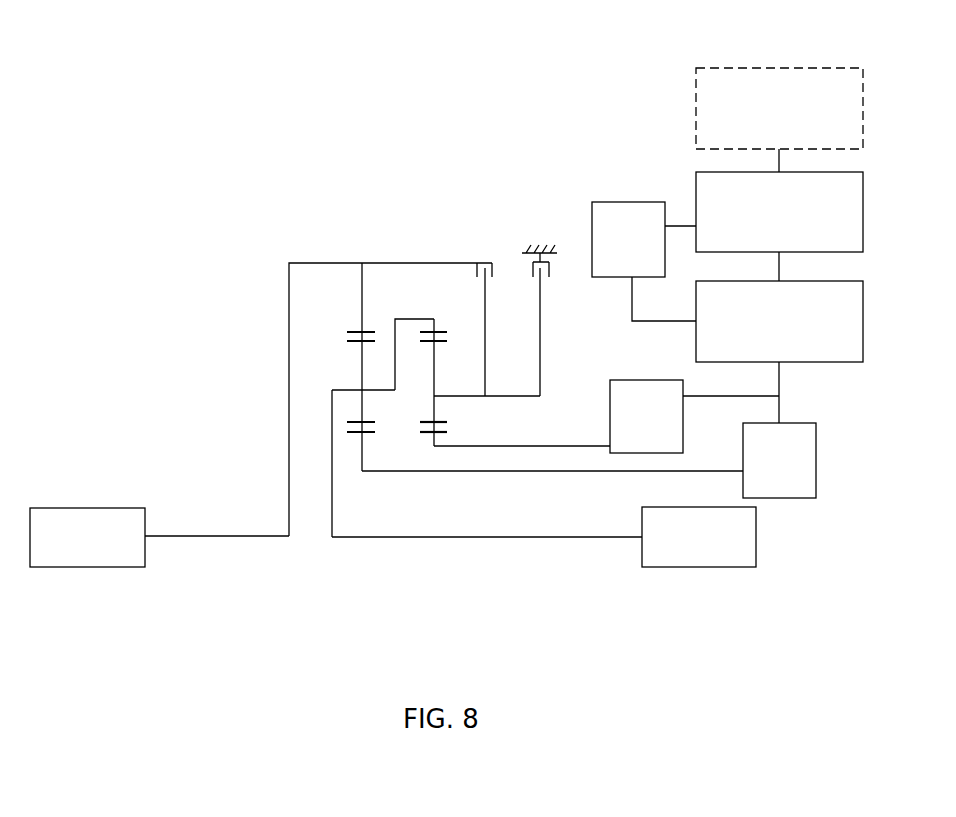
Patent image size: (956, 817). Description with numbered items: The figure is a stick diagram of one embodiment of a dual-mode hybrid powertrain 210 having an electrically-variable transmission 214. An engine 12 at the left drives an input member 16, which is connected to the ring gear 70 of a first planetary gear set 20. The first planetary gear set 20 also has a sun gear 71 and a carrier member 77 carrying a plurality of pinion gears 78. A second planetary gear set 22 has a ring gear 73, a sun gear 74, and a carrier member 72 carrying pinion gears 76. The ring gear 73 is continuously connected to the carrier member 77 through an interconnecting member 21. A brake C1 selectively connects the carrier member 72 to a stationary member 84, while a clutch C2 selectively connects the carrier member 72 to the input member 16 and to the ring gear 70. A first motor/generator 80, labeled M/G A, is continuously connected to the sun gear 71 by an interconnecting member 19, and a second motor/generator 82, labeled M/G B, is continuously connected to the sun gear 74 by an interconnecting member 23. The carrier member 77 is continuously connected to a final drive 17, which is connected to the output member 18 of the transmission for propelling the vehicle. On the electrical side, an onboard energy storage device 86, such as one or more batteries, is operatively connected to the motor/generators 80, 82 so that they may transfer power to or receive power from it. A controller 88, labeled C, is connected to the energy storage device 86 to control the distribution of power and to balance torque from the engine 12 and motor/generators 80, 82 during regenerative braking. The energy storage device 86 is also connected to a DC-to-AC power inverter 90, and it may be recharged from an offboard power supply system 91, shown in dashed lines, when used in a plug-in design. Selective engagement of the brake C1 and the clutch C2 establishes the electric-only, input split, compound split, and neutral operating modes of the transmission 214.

The engine 12 is at (58, 508).
The input member 16 is at (208, 537).
The final drive 17 is at (756, 535).
The output member 18 is at (492, 538).
The interconnecting member 19 is at (506, 473).
The first planetary gear set 20 is at (314, 398).
The interconnecting member 21 is at (395, 338).
The second planetary gear set 22 is at (490, 402).
The interconnecting member 23 is at (560, 447).
The ring gear 70 is at (357, 330).
The sun gear 71 is at (371, 432).
The carrier member 72 is at (441, 398).
The ring gear 73 is at (437, 330).
The sun gear 74 is at (440, 432).
The pinion gears 76 is at (434, 380).
The carrier member 77 is at (372, 390).
The pinion gears 78 is at (362, 373).
The first motor/generator 80 is at (816, 448).
The second motor/generator 82 is at (663, 380).
The stationary member 84 is at (522, 253).
The energy storage device 86 is at (863, 218).
The controller 88 is at (643, 202).
The power inverter 90 is at (863, 328).
The offboard power supply system 91 is at (758, 68).
The powertrain 210 is at (409, 138).
The electrically-variable transmission 214 is at (333, 229).
The brake C1 is at (542, 278).
The clutch C2 is at (487, 278).